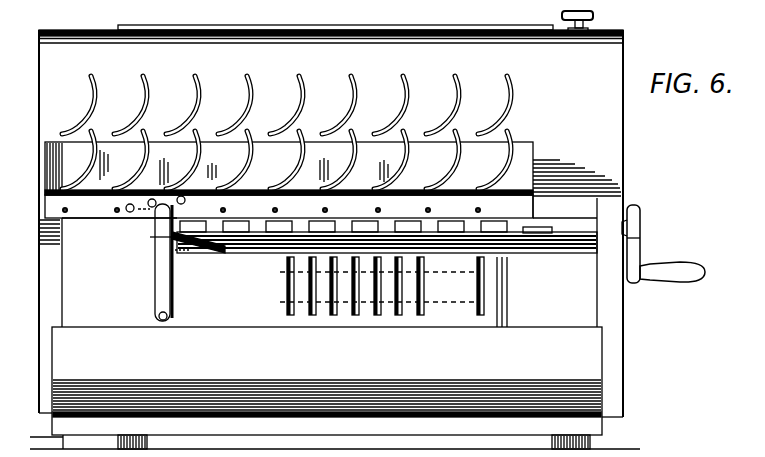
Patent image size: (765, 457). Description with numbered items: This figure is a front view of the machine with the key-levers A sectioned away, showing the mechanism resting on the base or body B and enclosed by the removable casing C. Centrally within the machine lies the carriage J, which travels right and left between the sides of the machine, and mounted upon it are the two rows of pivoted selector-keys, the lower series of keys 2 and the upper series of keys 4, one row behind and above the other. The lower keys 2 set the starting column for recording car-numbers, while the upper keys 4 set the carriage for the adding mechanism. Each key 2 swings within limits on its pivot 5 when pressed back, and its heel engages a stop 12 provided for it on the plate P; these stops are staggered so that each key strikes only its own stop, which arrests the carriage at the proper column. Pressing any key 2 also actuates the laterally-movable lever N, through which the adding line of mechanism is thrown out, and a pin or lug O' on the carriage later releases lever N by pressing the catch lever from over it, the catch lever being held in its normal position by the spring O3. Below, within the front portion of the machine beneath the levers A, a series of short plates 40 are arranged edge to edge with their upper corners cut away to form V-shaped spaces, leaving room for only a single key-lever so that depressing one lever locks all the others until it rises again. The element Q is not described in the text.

The removable casing C is at (624, 150).
The selector-keys 4 is at (509, 104).
The carriage J is at (289, 168).
The selector-keys 2 is at (505, 160).
The plate P is at (321, 215).
The stop 12 is at (542, 228).
The key-levers A is at (490, 266).
The short plates 40 is at (424, 289).
The lever arm Q is at (163, 229).
The laterally-movable lever N is at (183, 213).
The pin or lug O' is at (136, 209).
The spring O3 is at (185, 252).
The pivot 5 is at (118, 213).
The base or body B is at (605, 418).